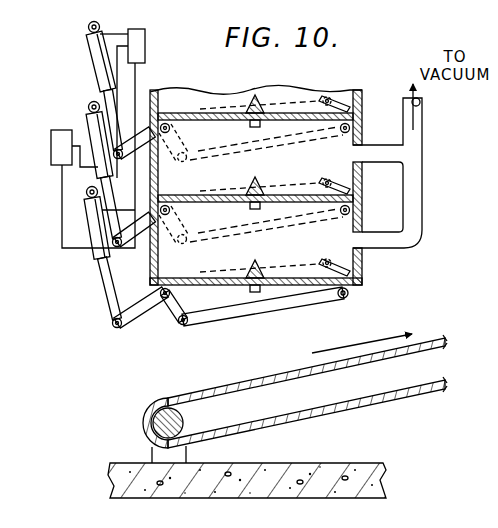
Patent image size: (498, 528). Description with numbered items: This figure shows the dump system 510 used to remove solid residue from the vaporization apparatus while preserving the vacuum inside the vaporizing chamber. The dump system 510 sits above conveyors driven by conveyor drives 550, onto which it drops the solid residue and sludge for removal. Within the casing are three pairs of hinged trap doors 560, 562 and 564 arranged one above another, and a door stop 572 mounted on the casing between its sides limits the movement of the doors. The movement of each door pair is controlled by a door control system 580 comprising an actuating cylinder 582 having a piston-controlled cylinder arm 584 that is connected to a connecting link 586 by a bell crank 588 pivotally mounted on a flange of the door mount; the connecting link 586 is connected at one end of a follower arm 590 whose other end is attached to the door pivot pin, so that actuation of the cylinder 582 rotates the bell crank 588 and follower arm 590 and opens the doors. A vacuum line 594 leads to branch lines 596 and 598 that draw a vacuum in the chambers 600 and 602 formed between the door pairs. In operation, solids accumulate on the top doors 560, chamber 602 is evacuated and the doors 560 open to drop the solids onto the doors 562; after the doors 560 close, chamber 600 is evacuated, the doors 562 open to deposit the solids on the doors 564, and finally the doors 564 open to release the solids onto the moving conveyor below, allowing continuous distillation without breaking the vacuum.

The dump system 510 is at (366, 88).
The conveyor drive 550 is at (187, 421).
The trap doors 560 is at (311, 121).
The trap doors 562 is at (307, 203).
The trap doors 564 is at (316, 286).
The door stop 572 is at (258, 100).
The door control system 580 is at (154, 56).
The actuating cylinder 582 is at (95, 232).
The cylinder arm 584 is at (108, 300).
The connecting link 586 is at (220, 307).
The bell crank 588 is at (183, 326).
The follower arm 590 is at (337, 299).
The vacuum line 594 is at (415, 203).
The branch line 596 is at (376, 238).
The branch line 598 is at (381, 155).
The chamber 600 is at (238, 251).
The chamber 602 is at (233, 167).